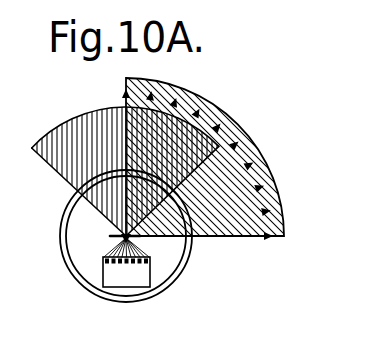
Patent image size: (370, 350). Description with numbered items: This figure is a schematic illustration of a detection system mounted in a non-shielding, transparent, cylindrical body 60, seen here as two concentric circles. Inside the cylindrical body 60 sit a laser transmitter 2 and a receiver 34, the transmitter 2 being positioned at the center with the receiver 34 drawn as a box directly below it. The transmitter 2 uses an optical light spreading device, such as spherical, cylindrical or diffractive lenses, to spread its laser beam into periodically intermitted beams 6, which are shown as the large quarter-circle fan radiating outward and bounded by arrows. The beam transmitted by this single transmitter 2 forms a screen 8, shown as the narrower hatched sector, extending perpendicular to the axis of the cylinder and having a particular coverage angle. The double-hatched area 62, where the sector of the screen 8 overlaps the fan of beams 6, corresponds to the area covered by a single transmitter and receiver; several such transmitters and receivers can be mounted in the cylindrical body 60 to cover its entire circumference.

The laser transmitter 2 is at (110, 241).
The periodically intermitted beams 6 is at (247, 222).
The screen 8 is at (53, 149).
The receiver 34 is at (121, 283).
The cylindrical body 60 is at (86, 286).
The double-hatched area 62 is at (122, 113).